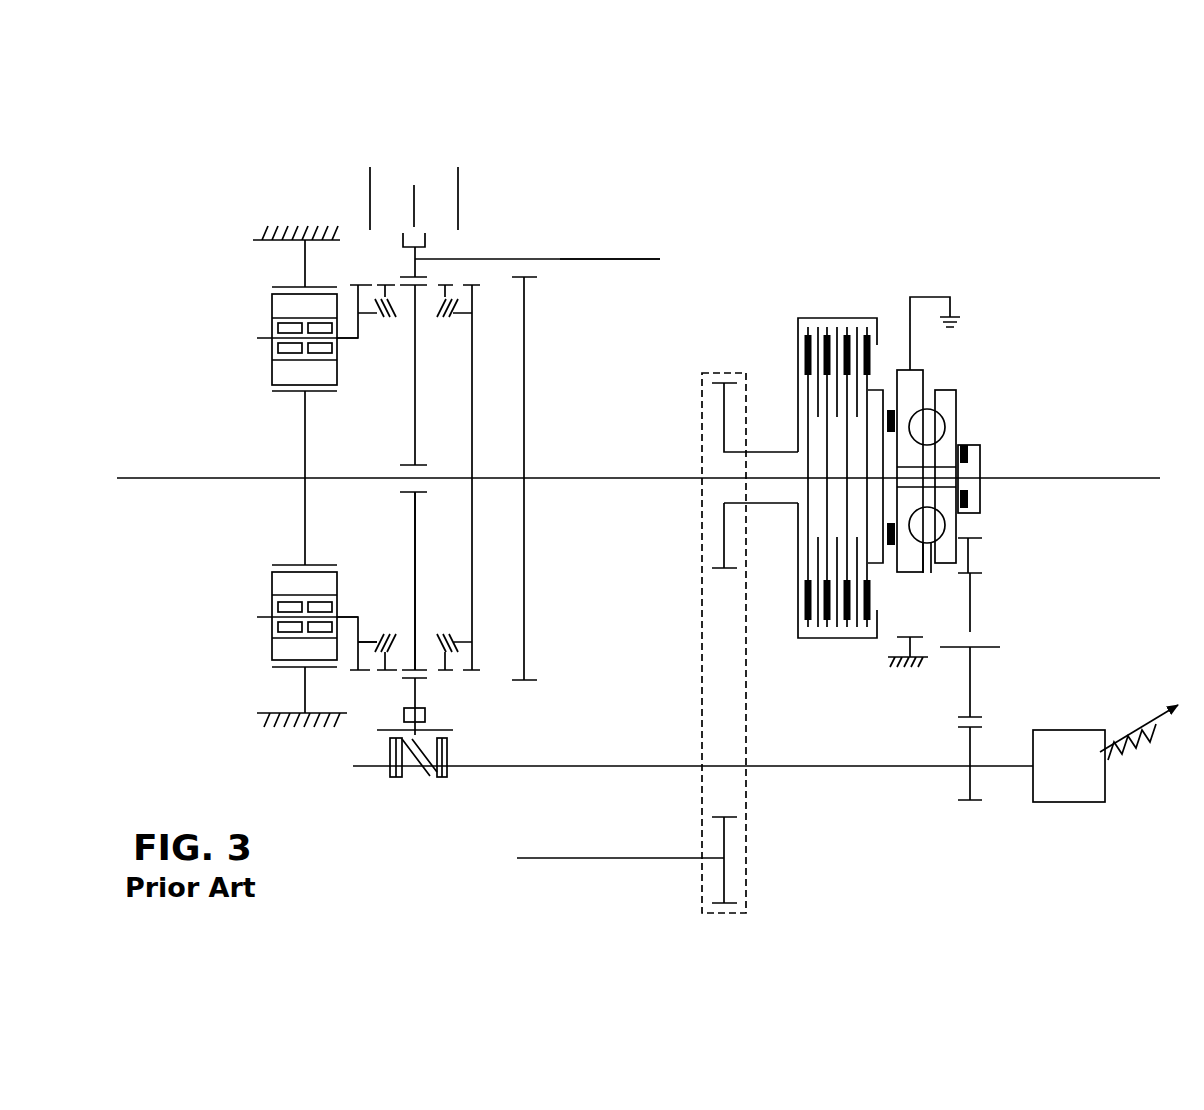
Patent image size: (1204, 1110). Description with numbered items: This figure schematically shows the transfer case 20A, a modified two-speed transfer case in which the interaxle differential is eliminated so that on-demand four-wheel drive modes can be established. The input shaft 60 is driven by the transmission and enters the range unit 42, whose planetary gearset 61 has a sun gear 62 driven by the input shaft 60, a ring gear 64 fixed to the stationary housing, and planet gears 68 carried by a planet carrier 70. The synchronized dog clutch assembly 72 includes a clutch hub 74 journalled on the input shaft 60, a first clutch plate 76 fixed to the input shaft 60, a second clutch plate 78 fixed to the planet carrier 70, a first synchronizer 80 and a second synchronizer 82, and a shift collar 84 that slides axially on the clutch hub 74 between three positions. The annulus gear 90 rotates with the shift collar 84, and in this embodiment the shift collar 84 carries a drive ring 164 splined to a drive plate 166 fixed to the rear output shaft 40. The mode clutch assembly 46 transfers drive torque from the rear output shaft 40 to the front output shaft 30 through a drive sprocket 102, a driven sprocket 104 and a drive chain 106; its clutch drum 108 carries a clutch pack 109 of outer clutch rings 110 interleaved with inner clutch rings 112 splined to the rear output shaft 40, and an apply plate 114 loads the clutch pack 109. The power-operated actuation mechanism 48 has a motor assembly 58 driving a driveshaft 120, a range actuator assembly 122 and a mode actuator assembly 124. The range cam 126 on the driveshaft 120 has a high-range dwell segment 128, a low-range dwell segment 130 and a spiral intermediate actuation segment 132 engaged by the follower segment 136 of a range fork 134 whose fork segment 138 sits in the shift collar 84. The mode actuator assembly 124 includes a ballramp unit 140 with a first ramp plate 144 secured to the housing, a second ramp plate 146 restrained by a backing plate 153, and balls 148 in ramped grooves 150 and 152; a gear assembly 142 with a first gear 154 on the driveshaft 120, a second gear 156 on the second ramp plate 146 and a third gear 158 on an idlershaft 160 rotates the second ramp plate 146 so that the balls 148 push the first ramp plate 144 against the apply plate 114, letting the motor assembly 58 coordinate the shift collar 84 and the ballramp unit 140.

The transfer case 20A is at (865, 142).
The front output shaft 30 is at (530, 860).
The rear output shaft 40 is at (1158, 478).
The range unit 42 is at (465, 235).
The mode clutch assembly 46 is at (823, 458).
The power-operated actuation mechanism 48 is at (908, 827).
The motor assembly 58 is at (1072, 742).
The input shaft 60 is at (281, 368).
The planetary gearset 61 is at (274, 647).
The sun gear 62 is at (305, 405).
The ring gear 64 is at (288, 287).
The planet gears 68 is at (283, 582).
The planet carrier 70 is at (347, 616).
The synchronized dog clutch assembly 72 is at (392, 345).
The clutch hub 74 is at (416, 580).
The first clutch plate 76 is at (472, 388).
The second clutch plate 78 is at (395, 606).
The first synchronizer 80 is at (443, 303).
The second synchronizer 82 is at (388, 663).
The shift collar 84 is at (405, 257).
The annulus gear 90 is at (505, 259).
The drive sprocket 102 is at (723, 536).
The driven sprocket 104 is at (724, 836).
The drive chain 106 is at (748, 710).
The clutch drum 108 is at (800, 326).
The clutch pack 109 is at (815, 432).
The outer clutch rings 110 is at (838, 330).
The inner clutch rings 112 is at (812, 525).
The apply plate 114 is at (874, 546).
The driveshaft 120 is at (857, 766).
The range actuator assembly 122 is at (418, 793).
The mode actuator assembly 124 is at (1045, 740).
The range cam 126 is at (405, 770).
The high-range dwell segment 128 is at (440, 752).
The low-range dwell segment 130 is at (395, 756).
The spiral intermediate actuation segment 132 is at (432, 776).
The range fork 134 is at (440, 729).
The follower segment 136 is at (412, 748).
The fork segment 138 is at (403, 721).
The ballramp unit 140 is at (1016, 436).
The gear assembly 142 is at (999, 740).
The first ramp plate 144 is at (912, 393).
The second ramp plate 146 is at (947, 437).
The balls 148 is at (934, 427).
The ramped grooves 150 is at (927, 573).
The ramped grooves 152 is at (937, 520).
The backing plate 153 is at (977, 453).
The first gear 154 is at (975, 803).
The second gear 156 is at (970, 543).
The third gear 158 is at (972, 608).
The idlershaft 160 is at (952, 649).
The drive ring 164 is at (602, 259).
The drive plate 166 is at (524, 358).